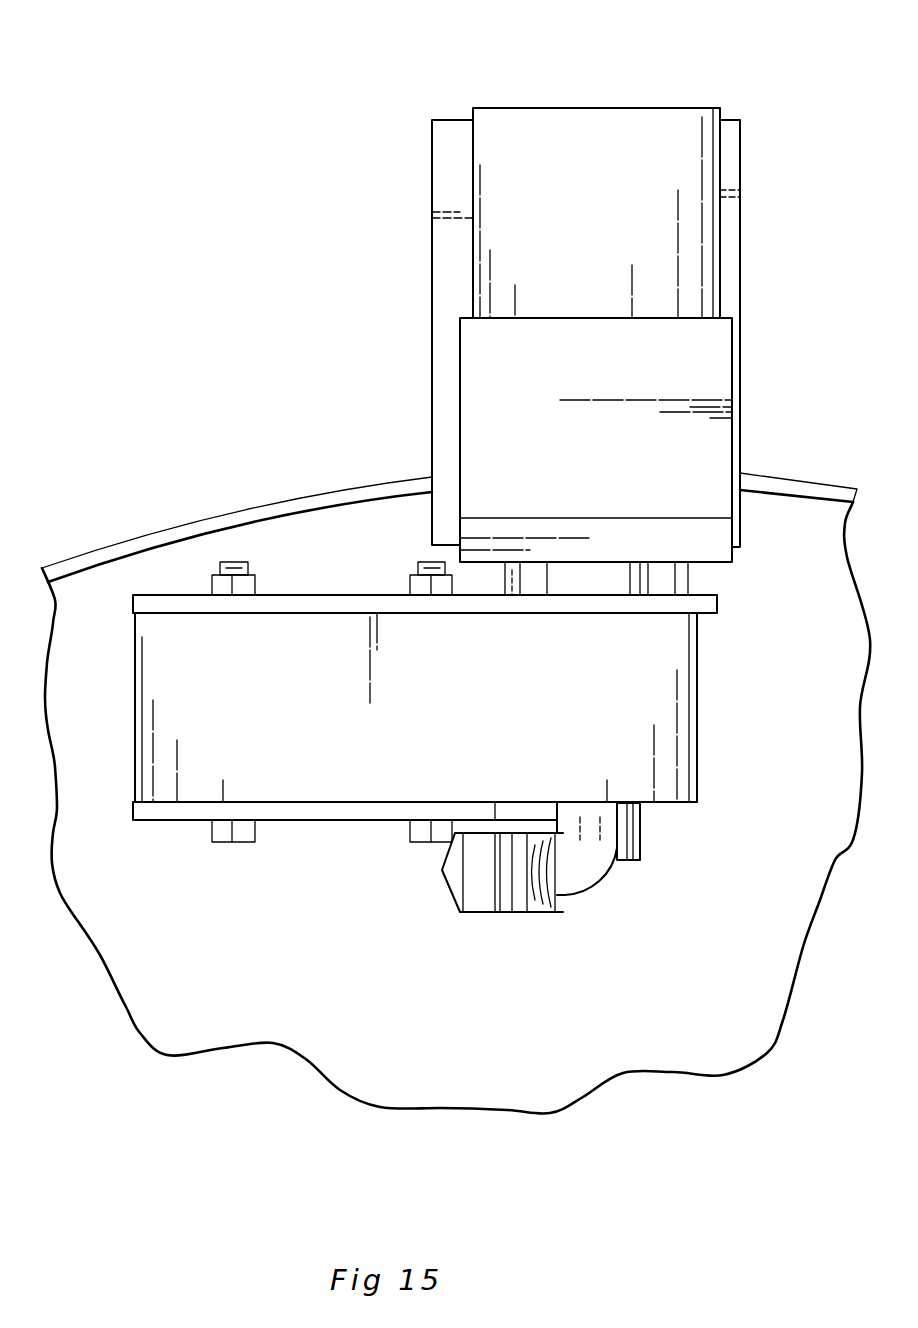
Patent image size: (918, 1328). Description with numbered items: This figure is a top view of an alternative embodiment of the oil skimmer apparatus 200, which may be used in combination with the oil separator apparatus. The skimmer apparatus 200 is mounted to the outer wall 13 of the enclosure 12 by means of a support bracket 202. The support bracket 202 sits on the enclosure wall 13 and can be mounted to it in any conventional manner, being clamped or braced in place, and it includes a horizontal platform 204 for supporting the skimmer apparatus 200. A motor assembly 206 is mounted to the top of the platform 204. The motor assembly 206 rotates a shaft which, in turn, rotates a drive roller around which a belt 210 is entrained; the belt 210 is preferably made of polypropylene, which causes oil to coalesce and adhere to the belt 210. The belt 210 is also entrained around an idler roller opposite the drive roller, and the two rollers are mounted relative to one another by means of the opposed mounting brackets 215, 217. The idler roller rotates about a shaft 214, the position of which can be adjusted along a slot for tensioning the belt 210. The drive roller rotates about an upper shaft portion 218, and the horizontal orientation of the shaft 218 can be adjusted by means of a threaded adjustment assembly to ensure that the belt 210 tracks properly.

The enclosure 12 is at (158, 528).
The outer wall 13 is at (82, 562).
The skimmer apparatus 200 is at (198, 194).
The support bracket 202 is at (743, 119).
The horizontal platform 204 is at (450, 167).
The motor assembly 206 is at (460, 335).
The belt 210 is at (483, 715).
The shaft 214 is at (228, 567).
The mounting bracket 215 is at (300, 603).
The mounting bracket 217 is at (318, 812).
The upper shaft portion 218 is at (590, 825).